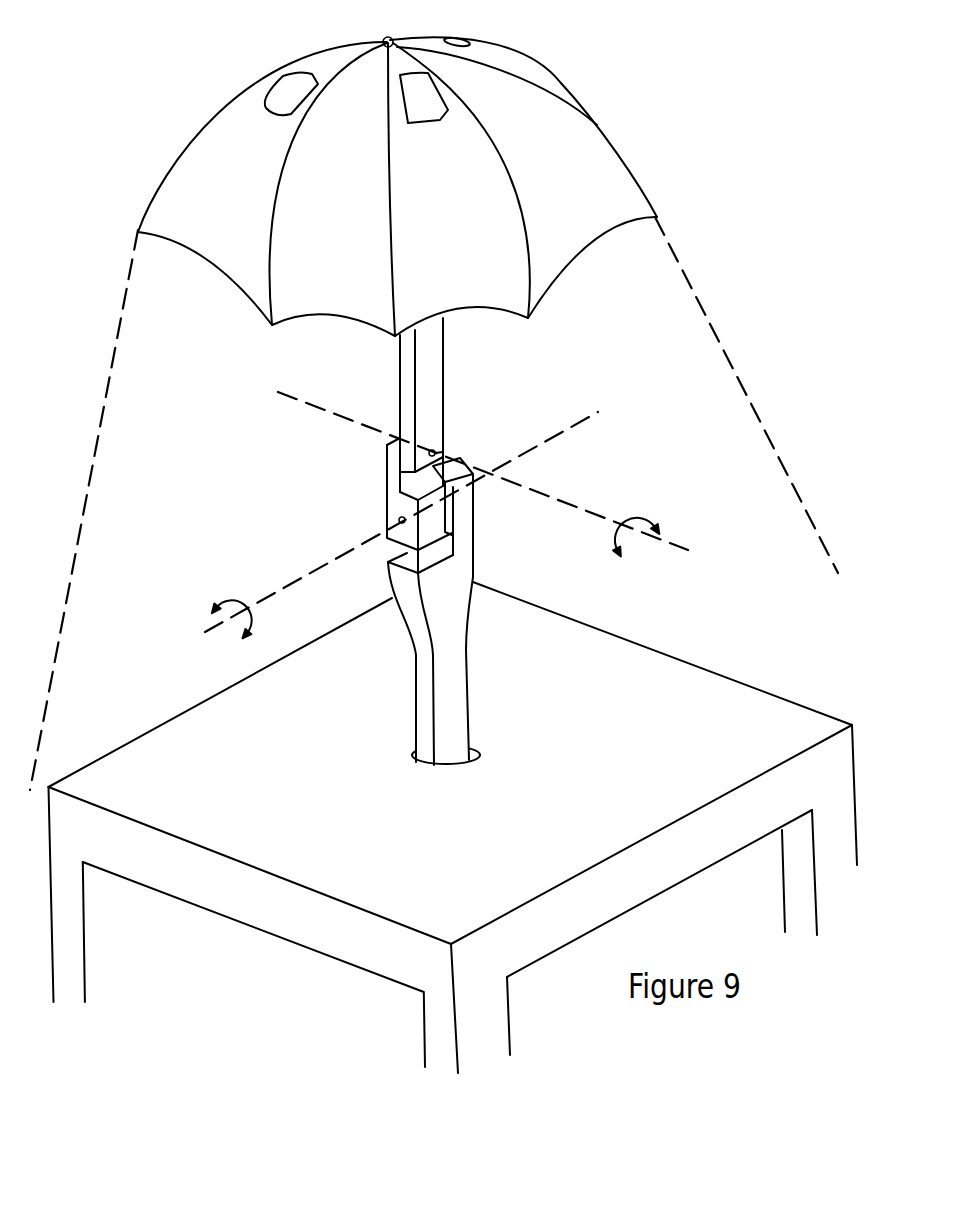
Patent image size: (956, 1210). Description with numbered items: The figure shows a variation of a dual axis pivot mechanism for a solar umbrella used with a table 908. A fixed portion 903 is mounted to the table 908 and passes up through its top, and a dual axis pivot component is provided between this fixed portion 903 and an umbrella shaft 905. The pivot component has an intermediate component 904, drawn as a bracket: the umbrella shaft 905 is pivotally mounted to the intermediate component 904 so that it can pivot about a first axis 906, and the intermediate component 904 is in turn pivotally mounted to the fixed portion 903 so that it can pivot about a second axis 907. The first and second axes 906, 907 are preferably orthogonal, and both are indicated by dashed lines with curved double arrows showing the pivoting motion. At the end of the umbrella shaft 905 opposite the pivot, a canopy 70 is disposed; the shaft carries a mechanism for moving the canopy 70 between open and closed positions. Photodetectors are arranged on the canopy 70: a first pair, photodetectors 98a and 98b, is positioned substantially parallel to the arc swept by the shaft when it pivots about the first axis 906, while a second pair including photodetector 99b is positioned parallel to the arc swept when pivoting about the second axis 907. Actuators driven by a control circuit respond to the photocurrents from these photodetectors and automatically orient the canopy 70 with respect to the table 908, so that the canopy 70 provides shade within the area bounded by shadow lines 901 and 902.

The canopy 70 is at (633, 170).
The photodetector 98a is at (283, 94).
The photodetector 98b is at (462, 42).
The photodetector 99b is at (430, 97).
The shadow line 901 is at (55, 647).
The shadow line 902 is at (762, 425).
The fixed portion 903 is at (453, 693).
The intermediate component 904 is at (392, 503).
The umbrella shaft 905 is at (428, 425).
The first axis 906 is at (587, 513).
The second axis 907 is at (590, 421).
The table 908 is at (690, 662).